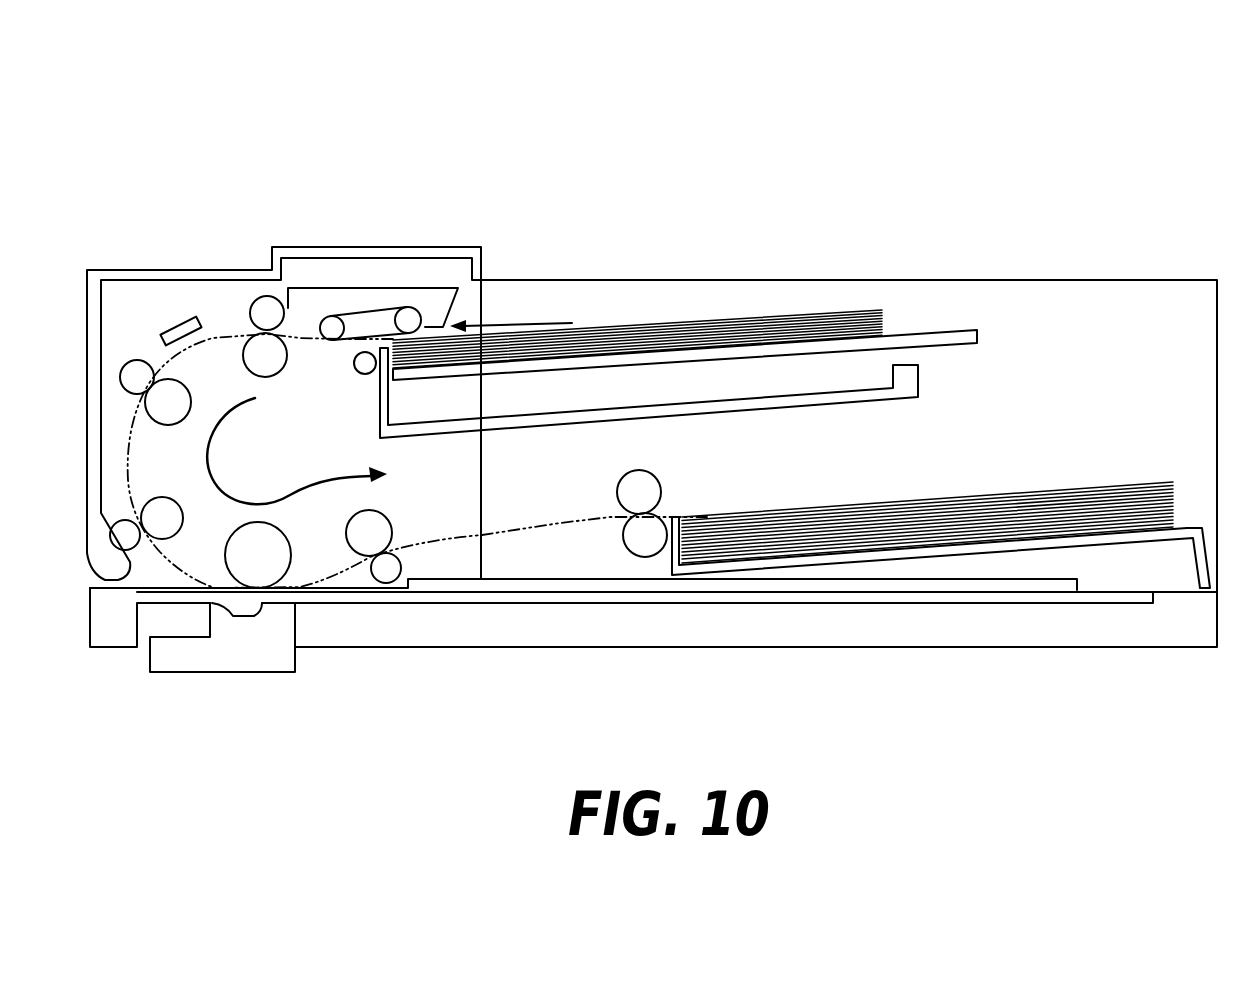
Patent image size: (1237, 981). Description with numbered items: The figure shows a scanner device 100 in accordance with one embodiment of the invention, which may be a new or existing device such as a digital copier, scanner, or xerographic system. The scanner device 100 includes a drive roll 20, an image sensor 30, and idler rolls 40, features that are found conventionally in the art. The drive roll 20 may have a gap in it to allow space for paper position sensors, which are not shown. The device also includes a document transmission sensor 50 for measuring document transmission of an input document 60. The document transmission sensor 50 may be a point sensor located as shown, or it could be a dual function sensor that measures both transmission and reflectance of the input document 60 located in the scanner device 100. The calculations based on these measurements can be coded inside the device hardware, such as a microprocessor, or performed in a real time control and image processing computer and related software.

The scanner device 100 is at (860, 176).
The input document 60 is at (665, 287).
The document transmission sensor 50 is at (178, 323).
The idler rolls 40 is at (112, 572).
The image sensor 30 is at (227, 657).
The drive roll 20 is at (253, 553).